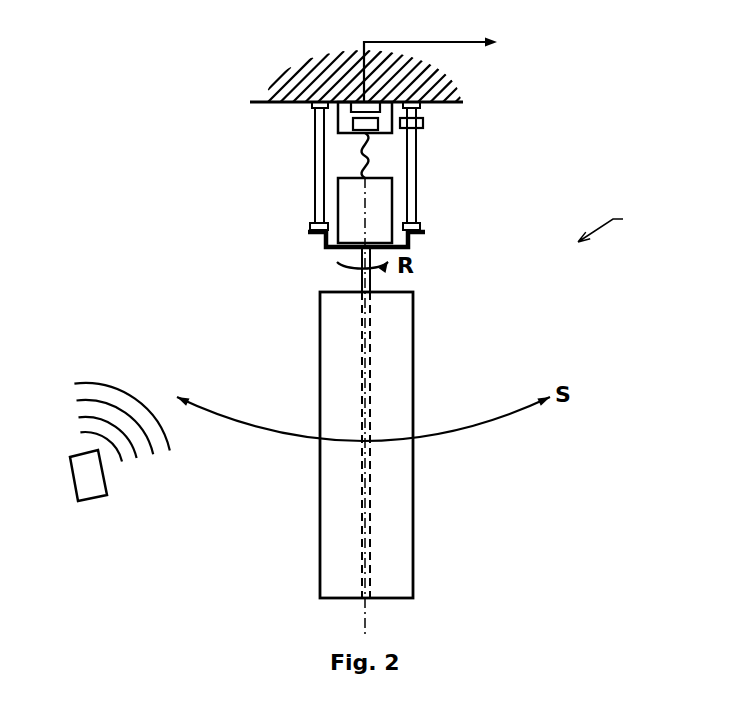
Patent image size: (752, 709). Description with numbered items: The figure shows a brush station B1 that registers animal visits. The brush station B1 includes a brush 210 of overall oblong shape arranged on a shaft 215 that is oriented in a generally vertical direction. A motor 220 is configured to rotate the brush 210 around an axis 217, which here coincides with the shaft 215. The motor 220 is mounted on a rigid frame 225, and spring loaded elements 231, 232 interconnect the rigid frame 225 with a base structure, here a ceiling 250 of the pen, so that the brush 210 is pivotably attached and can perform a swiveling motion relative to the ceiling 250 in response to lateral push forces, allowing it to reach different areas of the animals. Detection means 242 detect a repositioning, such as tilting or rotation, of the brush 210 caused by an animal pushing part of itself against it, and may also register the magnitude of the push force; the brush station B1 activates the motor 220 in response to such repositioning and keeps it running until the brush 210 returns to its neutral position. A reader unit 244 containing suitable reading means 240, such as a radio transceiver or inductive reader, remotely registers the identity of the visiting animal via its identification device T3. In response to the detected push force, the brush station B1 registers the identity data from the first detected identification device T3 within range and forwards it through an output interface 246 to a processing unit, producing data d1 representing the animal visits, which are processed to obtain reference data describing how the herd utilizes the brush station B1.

The brush 210 is at (413, 529).
The shaft 215 is at (370, 372).
The axis 217 is at (363, 598).
The motor 220 is at (393, 208).
The rigid frame 225 is at (322, 245).
The spring loaded element 231 is at (418, 170).
The spring loaded element 232 is at (315, 202).
The reading means 240 is at (352, 137).
The detection means 242 is at (423, 125).
The reader unit 244 is at (353, 125).
The output interface 246 is at (356, 104).
The ceiling 250 is at (258, 101).
The identification device T3 is at (92, 500).
The brush station B1 is at (619, 226).
The data d1 is at (473, 67).